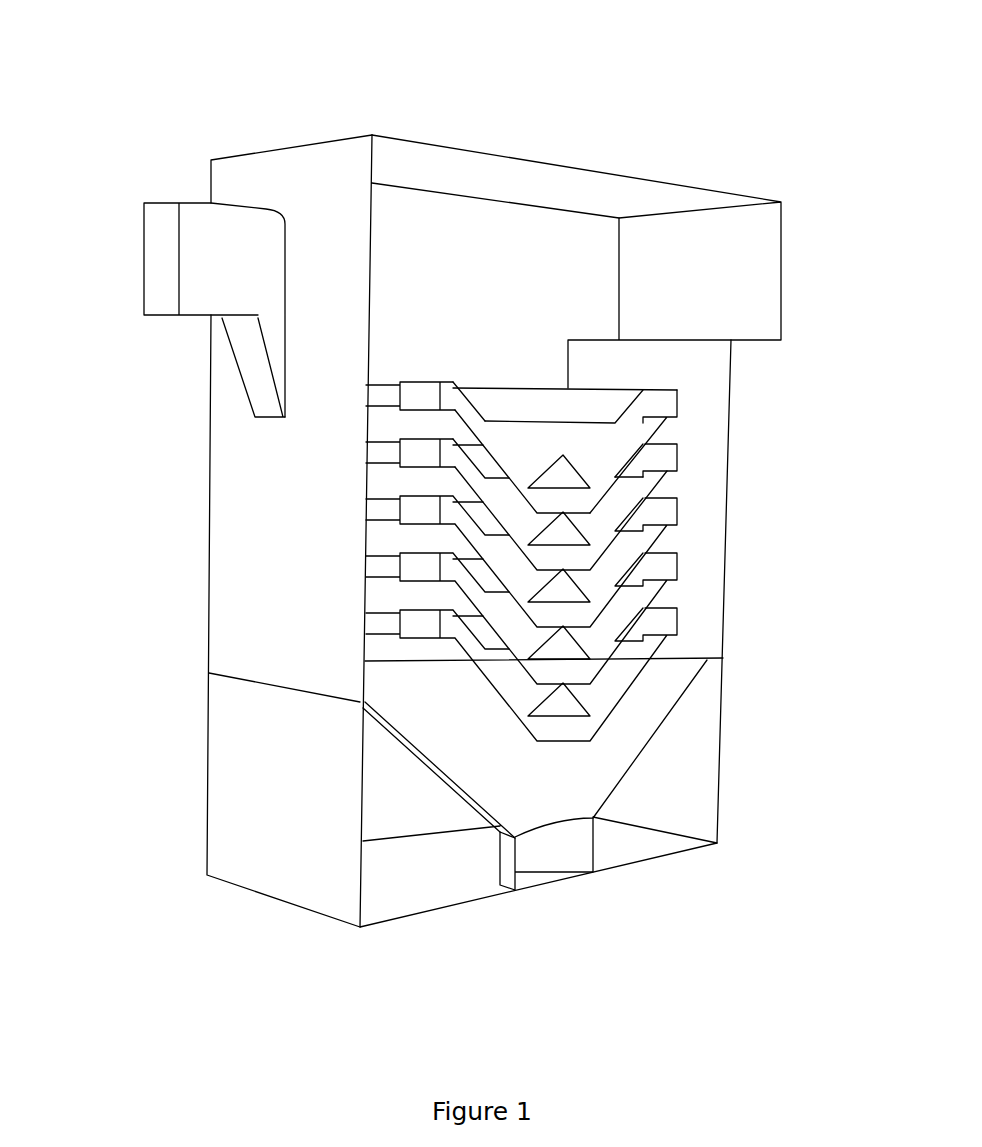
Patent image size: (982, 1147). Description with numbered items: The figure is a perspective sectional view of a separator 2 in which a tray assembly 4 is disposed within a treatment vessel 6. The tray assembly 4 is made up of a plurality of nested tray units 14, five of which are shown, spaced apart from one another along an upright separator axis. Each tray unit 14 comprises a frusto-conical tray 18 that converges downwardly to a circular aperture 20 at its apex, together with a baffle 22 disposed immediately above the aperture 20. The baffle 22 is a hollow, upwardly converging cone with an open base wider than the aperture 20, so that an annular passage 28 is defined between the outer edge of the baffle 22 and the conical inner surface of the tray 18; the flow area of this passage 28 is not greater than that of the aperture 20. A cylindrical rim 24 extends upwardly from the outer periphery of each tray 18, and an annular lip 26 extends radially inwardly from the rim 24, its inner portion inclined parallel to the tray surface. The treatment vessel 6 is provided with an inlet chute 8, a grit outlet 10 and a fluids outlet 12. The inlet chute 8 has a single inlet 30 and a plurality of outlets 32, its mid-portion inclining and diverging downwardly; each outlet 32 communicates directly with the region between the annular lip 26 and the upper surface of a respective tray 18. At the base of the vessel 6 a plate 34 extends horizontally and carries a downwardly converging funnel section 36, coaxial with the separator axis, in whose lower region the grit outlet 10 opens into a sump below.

The separator 2 is at (277, 100).
The tray assembly 4 is at (476, 553).
The treatment vessel 6 is at (283, 553).
The inlet chute 8 is at (245, 360).
The grit outlet 10 is at (542, 878).
The fluids outlet 12 is at (731, 258).
The tray unit 14 is at (487, 355).
The frusto-conical tray 18 is at (443, 465).
The circular aperture 20 is at (573, 518).
The baffle 22 is at (537, 478).
The cylindrical rim 24 is at (677, 456).
The annular lip 26 is at (640, 403).
The annular passage 28 is at (512, 498).
The inlet 30 is at (152, 255).
The outlets 32 is at (393, 398).
The plate 34 is at (707, 663).
The funnel section 36 is at (403, 742).